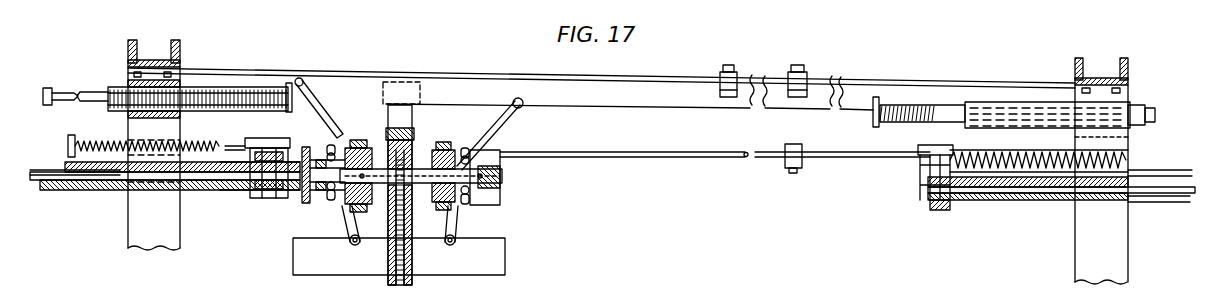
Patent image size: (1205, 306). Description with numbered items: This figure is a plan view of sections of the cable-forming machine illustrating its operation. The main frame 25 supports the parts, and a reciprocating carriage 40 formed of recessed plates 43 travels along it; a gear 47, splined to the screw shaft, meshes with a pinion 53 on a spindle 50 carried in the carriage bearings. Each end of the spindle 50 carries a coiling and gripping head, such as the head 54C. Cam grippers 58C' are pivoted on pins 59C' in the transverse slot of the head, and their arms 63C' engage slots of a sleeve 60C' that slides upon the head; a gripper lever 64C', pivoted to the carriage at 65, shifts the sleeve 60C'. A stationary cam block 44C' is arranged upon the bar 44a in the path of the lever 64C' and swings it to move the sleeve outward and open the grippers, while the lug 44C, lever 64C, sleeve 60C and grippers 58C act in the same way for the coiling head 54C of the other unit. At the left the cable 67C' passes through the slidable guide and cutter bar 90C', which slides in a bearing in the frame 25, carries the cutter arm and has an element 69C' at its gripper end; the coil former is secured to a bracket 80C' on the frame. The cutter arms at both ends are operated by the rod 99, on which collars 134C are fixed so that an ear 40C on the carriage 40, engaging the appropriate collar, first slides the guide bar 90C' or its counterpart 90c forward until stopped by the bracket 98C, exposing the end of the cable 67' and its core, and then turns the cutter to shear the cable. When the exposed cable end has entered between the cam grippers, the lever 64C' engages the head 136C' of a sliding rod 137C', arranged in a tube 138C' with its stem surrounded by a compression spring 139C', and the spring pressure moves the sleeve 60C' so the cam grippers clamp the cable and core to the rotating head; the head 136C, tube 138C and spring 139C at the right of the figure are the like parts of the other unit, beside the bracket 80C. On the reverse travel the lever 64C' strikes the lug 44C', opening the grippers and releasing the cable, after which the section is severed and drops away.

The main frame 25 is at (1083, 254).
The reciprocating carriage 40 is at (390, 276).
The recessed plates 43 is at (505, 262).
The gear 47 is at (402, 276).
The spindle 50 is at (412, 190).
The pinion 53 is at (412, 160).
The coiling head 54C is at (452, 162).
The grippers 58C is at (490, 176).
The cam grippers 58C' is at (275, 160).
The pins 59C' is at (305, 192).
The sleeve 60C is at (505, 214).
The sleeve 60C' is at (357, 171).
The gripper arms 63C' is at (328, 210).
The gripper lever 64C is at (507, 134).
The gripper lever 64C' is at (331, 108).
The pivot 65 is at (350, 244).
The cable 67' is at (1160, 166).
The cable 67C' is at (136, 155).
The plate 69C' is at (288, 199).
The bracket 80C is at (1061, 210).
The bracket 80C' is at (165, 190).
The guide and cutter bar 90c is at (1027, 204).
The guide and cutter bar 90C' is at (250, 198).
The bracket 98C is at (1132, 154).
The rod 99 is at (665, 152).
The collar 134C is at (798, 174).
The head 136C is at (845, 118).
The head 136C' is at (319, 70).
The sliding rod 137C' is at (75, 108).
The tube 138C is at (1060, 89).
The tube 138C' is at (198, 65).
The compression spring 139C is at (922, 81).
The compression spring 139C' is at (198, 79).
The carriage lug 40C is at (500, 167).
The bar 44a is at (925, 82).
The lug 44C is at (824, 77).
The stationary cam block 44C' is at (758, 70).